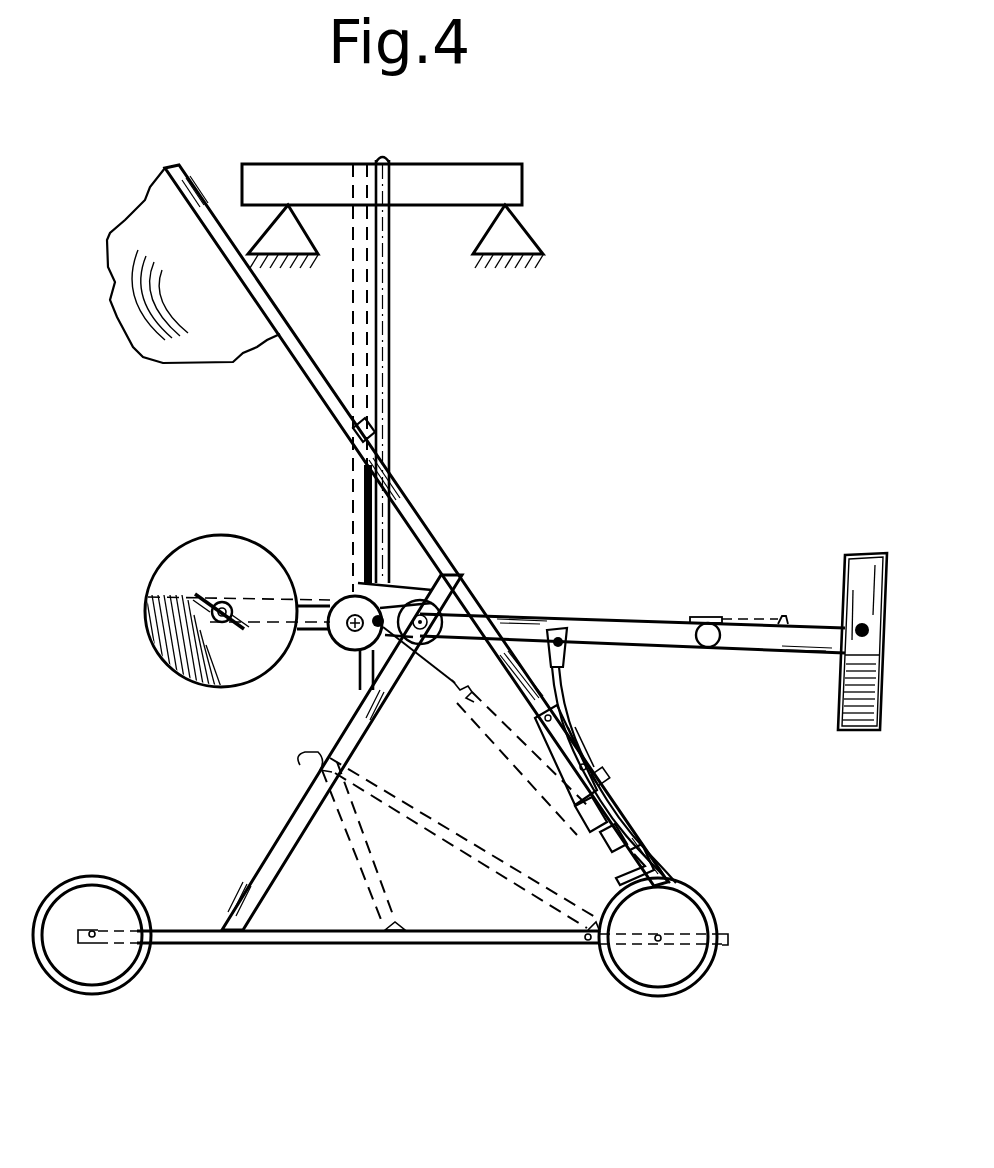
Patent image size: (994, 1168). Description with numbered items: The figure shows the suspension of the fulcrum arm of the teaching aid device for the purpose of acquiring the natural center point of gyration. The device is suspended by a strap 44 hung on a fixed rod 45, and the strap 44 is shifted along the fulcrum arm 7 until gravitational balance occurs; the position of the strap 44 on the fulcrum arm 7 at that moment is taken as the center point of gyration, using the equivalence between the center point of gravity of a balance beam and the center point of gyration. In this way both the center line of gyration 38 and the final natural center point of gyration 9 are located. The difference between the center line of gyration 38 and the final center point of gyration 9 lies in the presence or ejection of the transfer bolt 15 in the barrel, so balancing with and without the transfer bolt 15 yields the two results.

The fulcrum arm 7 is at (315, 607).
The final natural center point of gyration 9 is at (360, 162).
The transfer bolt 15 is at (870, 567).
The center line of gyration 38 is at (384, 154).
The strap 44 is at (388, 453).
The fixed rod 45 is at (402, 207).